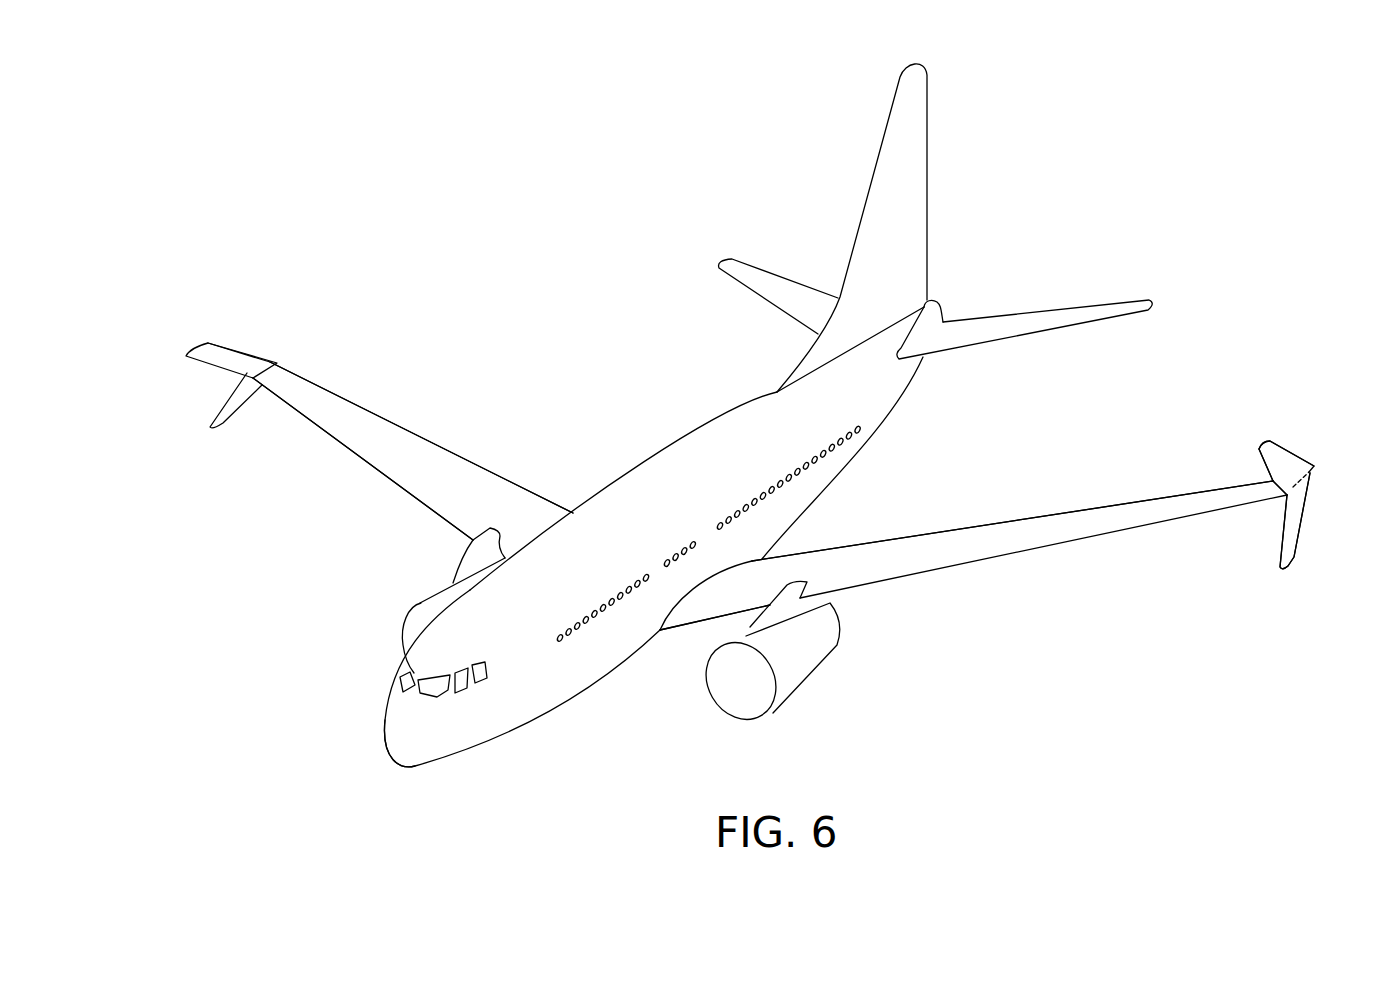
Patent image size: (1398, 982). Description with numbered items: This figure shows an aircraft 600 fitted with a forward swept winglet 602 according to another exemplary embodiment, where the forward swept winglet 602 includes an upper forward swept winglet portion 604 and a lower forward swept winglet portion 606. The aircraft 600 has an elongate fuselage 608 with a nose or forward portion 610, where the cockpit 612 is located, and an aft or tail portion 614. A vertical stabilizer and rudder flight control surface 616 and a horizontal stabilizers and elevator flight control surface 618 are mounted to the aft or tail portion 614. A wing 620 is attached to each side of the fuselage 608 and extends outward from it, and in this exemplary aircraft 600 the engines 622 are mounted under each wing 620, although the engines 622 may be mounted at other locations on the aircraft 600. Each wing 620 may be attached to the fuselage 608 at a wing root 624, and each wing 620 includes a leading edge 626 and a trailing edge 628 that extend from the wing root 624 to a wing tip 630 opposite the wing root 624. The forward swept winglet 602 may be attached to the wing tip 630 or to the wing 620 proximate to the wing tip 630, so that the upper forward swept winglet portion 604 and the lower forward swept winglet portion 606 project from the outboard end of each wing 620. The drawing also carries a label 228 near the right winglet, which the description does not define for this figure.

The aircraft 600 is at (583, 345).
The forward swept winglet 602 is at (212, 393).
The upper forward swept winglet portion 604 is at (238, 357).
The lower forward swept winglet portion 606 is at (213, 430).
The elongate fuselage 608 is at (687, 433).
The nose or forward portion 610 is at (478, 745).
The cockpit 612 is at (372, 685).
The aft or tail portion 614 is at (953, 250).
The vertical stabilizer and rudder flight control surface 616 is at (927, 145).
The horizontal stabilizers and elevator flight control surface 618 is at (767, 300).
The wing 620 is at (410, 440).
The engines 622 is at (420, 603).
The wing root 624 is at (708, 587).
The leading edge 626 is at (380, 476).
The trailing edge 628 is at (488, 468).
The wing tip 630 is at (287, 357).
The wingtip element 228 is at (1263, 465).